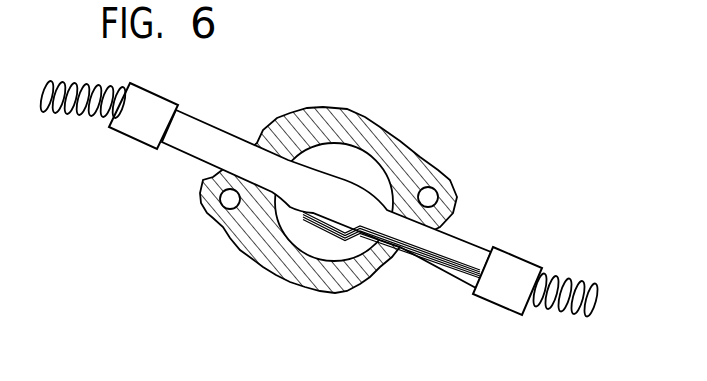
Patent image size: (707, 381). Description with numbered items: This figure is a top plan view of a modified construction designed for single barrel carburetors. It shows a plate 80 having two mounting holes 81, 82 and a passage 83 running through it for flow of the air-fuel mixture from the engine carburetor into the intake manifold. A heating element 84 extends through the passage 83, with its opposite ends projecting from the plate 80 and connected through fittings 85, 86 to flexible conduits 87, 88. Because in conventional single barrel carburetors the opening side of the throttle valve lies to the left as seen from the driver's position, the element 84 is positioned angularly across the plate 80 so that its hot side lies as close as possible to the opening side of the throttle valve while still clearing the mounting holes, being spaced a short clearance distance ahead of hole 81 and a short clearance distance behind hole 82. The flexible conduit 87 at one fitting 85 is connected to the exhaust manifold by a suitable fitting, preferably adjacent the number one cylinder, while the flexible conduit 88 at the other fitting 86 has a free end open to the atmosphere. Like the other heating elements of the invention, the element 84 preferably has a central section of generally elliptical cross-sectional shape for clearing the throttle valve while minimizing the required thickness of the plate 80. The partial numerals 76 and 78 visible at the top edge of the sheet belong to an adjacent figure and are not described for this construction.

The element of adjacent figure (partial) 76 is at (342, 3).
The element of adjacent figure (partial) 78 is at (403, 3).
The plate 80 is at (393, 152).
The mounting hole 81 is at (231, 206).
The mounting hole 82 is at (432, 196).
The passage 83 is at (357, 250).
The heating element 84 is at (305, 227).
The fitting 85 is at (152, 88).
The fitting 86 is at (524, 253).
The flexible conduit 87 is at (82, 113).
The flexible conduit 88 is at (550, 305).